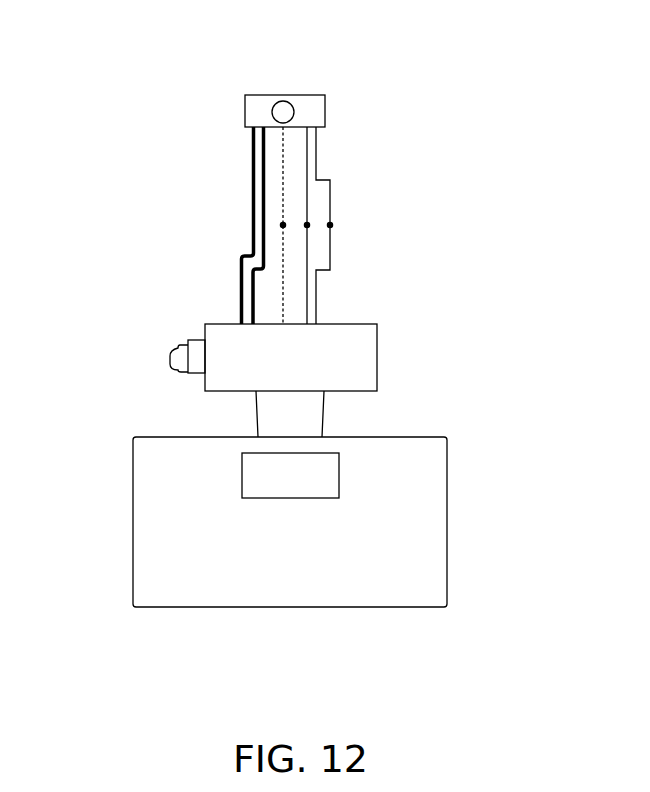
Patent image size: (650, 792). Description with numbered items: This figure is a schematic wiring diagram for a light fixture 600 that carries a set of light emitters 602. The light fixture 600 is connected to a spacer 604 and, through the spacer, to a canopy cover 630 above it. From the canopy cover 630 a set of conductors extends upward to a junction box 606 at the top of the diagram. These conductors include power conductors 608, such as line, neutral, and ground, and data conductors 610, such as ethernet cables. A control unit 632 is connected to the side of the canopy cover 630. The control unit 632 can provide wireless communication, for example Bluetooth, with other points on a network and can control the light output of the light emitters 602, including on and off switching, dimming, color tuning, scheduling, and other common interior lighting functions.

The light fixture 600 is at (447, 573).
The light emitters 602 is at (339, 480).
The spacer 604 is at (322, 422).
The junction box 606 is at (327, 100).
The power conductors 608 is at (330, 202).
The data conductors 610 is at (250, 178).
The canopy cover 630 is at (205, 326).
The control unit 632 is at (175, 372).